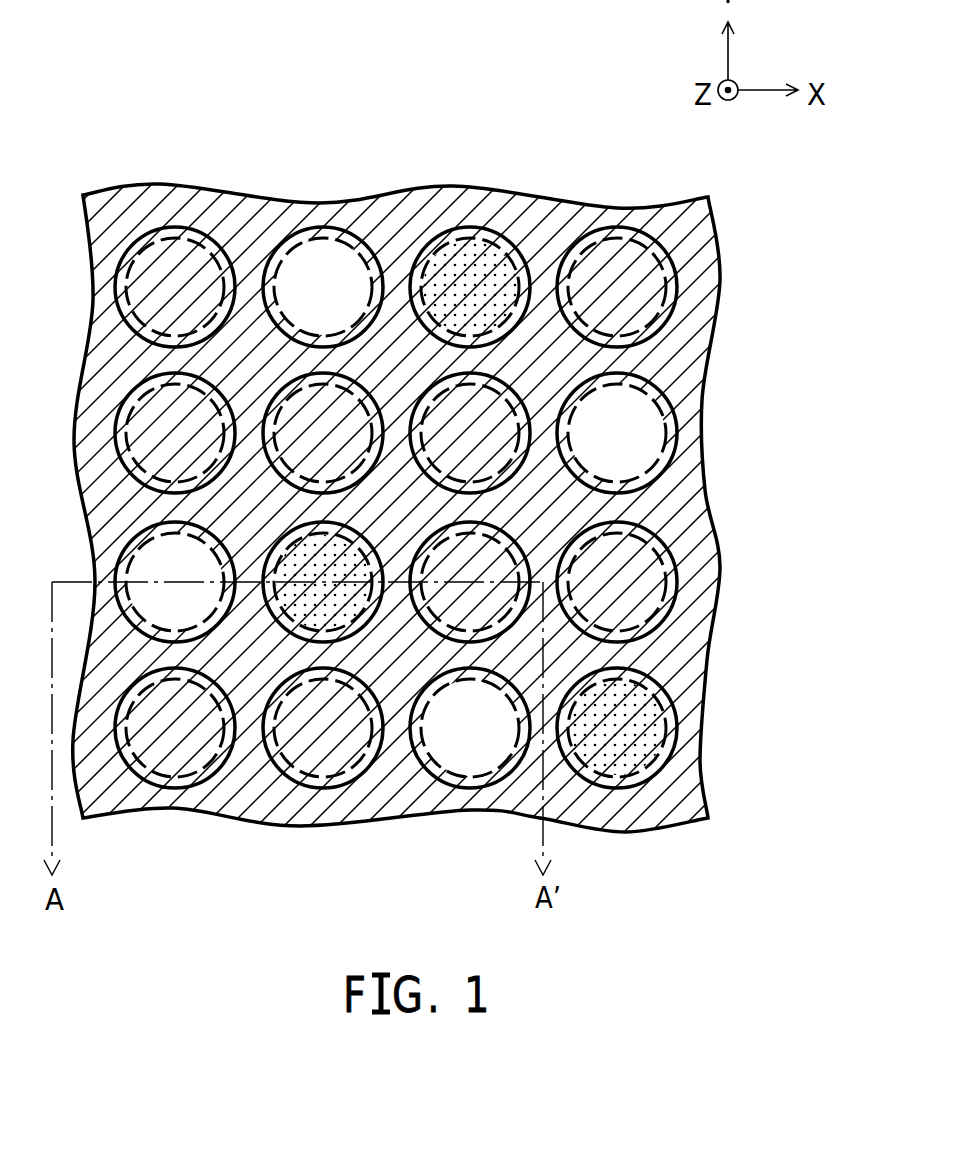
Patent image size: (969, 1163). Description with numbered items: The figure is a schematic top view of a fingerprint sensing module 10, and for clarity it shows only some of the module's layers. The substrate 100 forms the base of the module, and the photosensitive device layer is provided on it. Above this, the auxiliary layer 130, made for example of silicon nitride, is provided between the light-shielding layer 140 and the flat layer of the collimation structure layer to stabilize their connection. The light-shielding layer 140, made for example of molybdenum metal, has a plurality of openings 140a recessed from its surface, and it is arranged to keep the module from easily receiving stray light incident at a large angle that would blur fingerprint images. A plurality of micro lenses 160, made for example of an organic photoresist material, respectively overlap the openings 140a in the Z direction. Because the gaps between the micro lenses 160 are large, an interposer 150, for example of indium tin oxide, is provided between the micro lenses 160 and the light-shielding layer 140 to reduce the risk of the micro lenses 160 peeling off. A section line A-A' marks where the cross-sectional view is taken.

The fingerprint sensing module 10 is at (776, 893).
The substrate 100 is at (650, 428).
The auxiliary layer 130 is at (653, 723).
The light-shielding layer 140 is at (678, 542).
The opening 140a is at (706, 561).
The interposer 150 is at (688, 342).
The micro lenses 160 is at (575, 243).